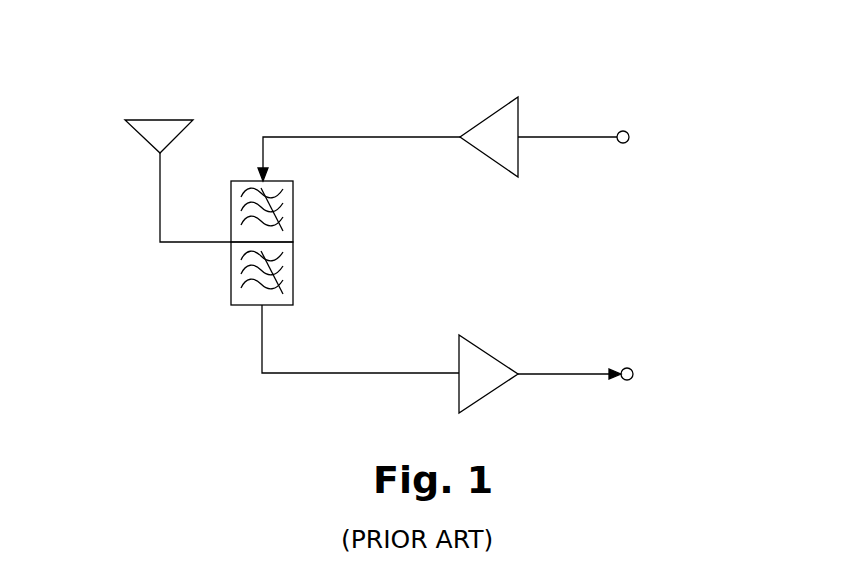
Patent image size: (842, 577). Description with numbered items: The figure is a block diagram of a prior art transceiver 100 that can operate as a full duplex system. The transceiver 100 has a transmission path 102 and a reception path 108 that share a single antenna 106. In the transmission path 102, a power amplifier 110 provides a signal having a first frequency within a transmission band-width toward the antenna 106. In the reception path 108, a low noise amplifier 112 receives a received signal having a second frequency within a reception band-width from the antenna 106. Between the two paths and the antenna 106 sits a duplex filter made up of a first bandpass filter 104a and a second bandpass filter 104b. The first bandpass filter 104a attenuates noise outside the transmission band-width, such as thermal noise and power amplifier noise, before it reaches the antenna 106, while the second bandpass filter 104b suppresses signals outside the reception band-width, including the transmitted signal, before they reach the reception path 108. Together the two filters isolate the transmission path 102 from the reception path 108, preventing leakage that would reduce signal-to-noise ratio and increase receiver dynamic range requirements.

The transceiver 100 is at (101, 27).
The transmission path 102 is at (648, 90).
The first bandpass filter 104a is at (293, 208).
The second bandpass filter 104b is at (293, 272).
The antenna 106 is at (167, 120).
The reception path 108 is at (643, 405).
The power amplifier 110 is at (497, 110).
The low noise amplifier 112 is at (482, 346).